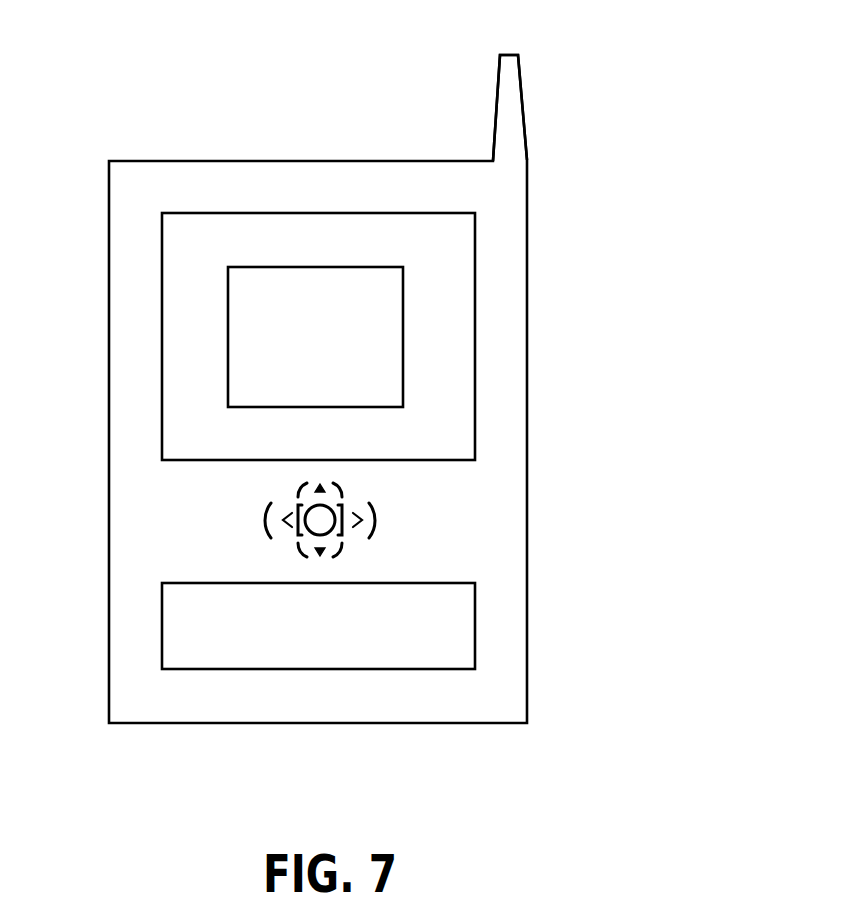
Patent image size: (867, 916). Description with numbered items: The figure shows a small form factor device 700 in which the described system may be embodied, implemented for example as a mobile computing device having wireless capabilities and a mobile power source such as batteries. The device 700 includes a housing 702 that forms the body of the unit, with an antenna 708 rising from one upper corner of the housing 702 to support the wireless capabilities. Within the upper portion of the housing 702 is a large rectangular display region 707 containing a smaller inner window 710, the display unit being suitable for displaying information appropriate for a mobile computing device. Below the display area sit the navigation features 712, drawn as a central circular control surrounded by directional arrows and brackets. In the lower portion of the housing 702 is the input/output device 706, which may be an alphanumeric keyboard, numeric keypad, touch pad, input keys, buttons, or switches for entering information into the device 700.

The small form factor device 700 is at (124, 68).
The housing 702 is at (528, 443).
The input/output (I/O) device 706 is at (476, 618).
The display 707 is at (476, 233).
The antenna 708 is at (496, 101).
The display window 710 is at (403, 354).
The navigation features 712 is at (384, 512).